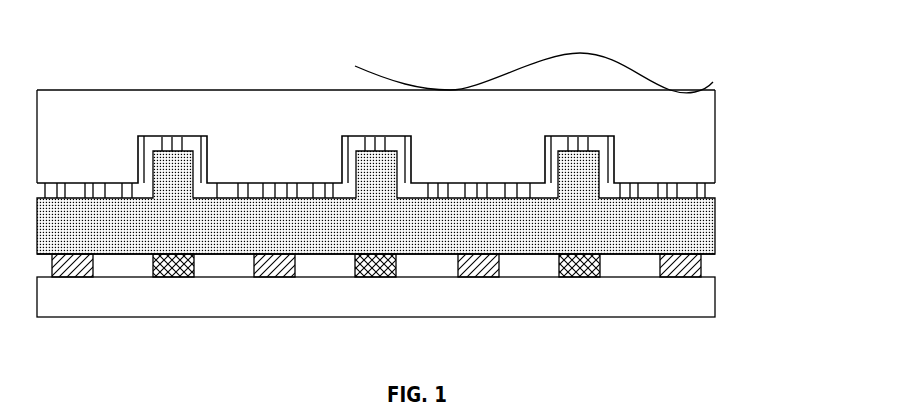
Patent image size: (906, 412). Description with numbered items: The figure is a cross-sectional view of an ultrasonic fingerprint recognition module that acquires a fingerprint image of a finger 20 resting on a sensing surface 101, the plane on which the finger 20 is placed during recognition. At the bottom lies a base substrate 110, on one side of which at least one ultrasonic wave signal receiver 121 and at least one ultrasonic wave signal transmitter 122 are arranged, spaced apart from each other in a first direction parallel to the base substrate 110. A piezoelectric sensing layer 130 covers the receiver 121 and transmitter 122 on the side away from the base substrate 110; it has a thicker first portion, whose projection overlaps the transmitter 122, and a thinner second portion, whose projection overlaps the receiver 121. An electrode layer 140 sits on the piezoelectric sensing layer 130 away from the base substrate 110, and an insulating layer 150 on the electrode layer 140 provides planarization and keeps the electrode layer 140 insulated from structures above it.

The finger 20 is at (636, 72).
The sensing surface 101 is at (124, 90).
The base substrate 110 is at (708, 308).
The ultrasonic wave signal receiver 121 is at (473, 268).
The ultrasonic wave signal transmitter 122 is at (586, 268).
The piezoelectric sensing layer 130 is at (700, 238).
The electrode layer 140 is at (707, 193).
The insulating layer 150 is at (700, 160).